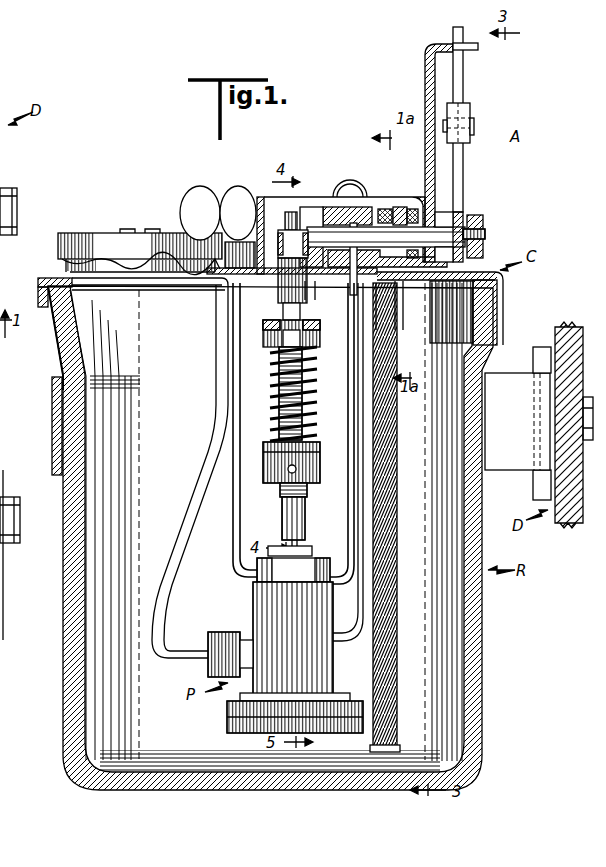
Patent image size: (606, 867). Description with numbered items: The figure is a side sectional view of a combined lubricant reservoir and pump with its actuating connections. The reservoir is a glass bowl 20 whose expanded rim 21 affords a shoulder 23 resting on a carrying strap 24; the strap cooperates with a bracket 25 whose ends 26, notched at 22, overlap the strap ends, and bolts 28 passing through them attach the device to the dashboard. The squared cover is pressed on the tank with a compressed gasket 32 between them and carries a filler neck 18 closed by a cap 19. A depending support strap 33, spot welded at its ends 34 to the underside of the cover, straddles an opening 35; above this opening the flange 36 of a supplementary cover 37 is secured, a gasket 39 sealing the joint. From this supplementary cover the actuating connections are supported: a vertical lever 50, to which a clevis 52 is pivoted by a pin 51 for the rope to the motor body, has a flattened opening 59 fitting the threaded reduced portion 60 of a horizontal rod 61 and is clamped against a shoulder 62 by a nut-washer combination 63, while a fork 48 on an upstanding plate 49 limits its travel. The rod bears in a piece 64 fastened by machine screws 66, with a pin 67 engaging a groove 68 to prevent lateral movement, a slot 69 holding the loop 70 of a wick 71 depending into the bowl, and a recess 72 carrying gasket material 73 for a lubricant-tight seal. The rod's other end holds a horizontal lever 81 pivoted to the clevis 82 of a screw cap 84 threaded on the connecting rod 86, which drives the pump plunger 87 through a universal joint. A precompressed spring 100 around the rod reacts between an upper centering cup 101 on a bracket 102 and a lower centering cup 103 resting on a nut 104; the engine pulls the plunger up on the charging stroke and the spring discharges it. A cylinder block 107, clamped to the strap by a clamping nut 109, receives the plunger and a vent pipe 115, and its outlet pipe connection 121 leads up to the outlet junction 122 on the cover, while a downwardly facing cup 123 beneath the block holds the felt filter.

The filler neck 18 is at (58, 265).
The cap 19 is at (106, 234).
The glass bowl 20 is at (64, 600).
The expanded rim 21 is at (56, 347).
The notch 22 is at (533, 356).
The shoulder 23 is at (58, 368).
The carrying strap 24 is at (52, 420).
The bracket 25 is at (0, 172).
The bracket ends 26 is at (555, 340).
The bolts 28 is at (17, 210).
The gasket 32 is at (38, 283).
The support strap 33 is at (232, 556).
The strap ends 34 is at (180, 286).
The opening 35 is at (276, 284).
The flange 36 is at (243, 242).
The supplementary cover 37 is at (314, 196).
The gasket 39 is at (225, 290).
The fork 48 is at (478, 48).
The upstanding plate 49 is at (425, 96).
The lever 50 is at (463, 70).
The pin 51 is at (474, 120).
The clevis 52 is at (470, 108).
The flattened opening 59 is at (468, 214).
The reduced portion 60 is at (488, 239).
The horizontal rod 61 is at (458, 282).
The shoulder 62 is at (452, 222).
The nut-washer combination 63 is at (485, 221).
The piece 64 is at (352, 182).
The machine screws 66 is at (370, 200).
The pin 67 is at (345, 268).
The groove 68 is at (370, 220).
The slot 69 is at (402, 282).
The loop 70 is at (392, 330).
The wick 71 is at (392, 470).
The recess 72 is at (436, 205).
The gasket material 73 is at (407, 207).
The horizontal lever 81 is at (262, 197).
The clevis 82 is at (238, 204).
The screw cap 84 is at (268, 346).
The connecting rod 86 is at (276, 415).
The pump plunger 87 is at (306, 546).
The precompressed spring 100 is at (318, 408).
The upper centering cup 101 is at (278, 348).
The bracket 102 is at (304, 360).
The lower centering cup 103 is at (268, 455).
The nut 104 is at (320, 470).
The cylinder block 107 is at (330, 665).
The clamping nut 109 is at (257, 573).
The vent pipe 115 is at (364, 532).
The outlet pipe connection 121 is at (160, 630).
The outlet junction 122 is at (219, 188).
The cup 123 is at (227, 712).